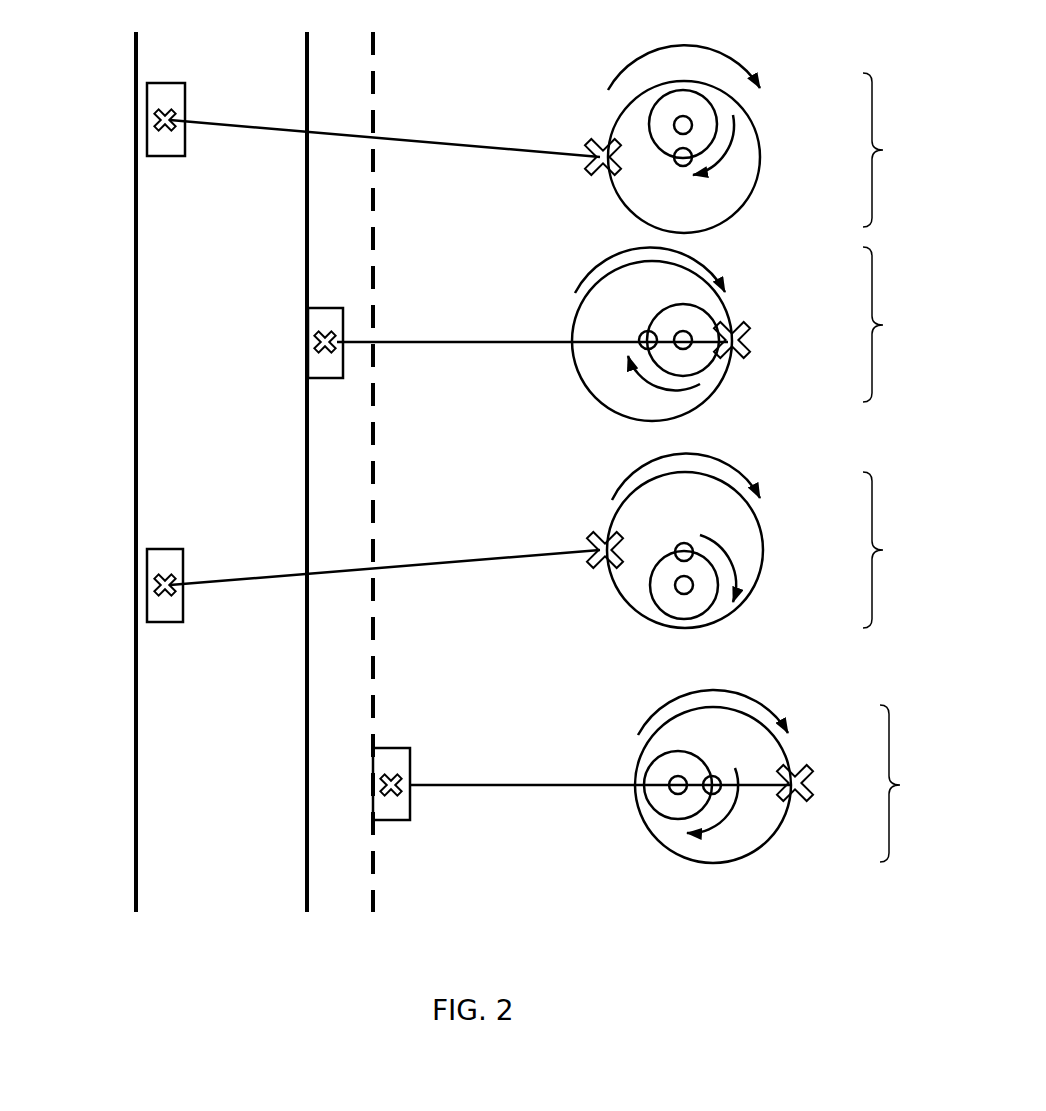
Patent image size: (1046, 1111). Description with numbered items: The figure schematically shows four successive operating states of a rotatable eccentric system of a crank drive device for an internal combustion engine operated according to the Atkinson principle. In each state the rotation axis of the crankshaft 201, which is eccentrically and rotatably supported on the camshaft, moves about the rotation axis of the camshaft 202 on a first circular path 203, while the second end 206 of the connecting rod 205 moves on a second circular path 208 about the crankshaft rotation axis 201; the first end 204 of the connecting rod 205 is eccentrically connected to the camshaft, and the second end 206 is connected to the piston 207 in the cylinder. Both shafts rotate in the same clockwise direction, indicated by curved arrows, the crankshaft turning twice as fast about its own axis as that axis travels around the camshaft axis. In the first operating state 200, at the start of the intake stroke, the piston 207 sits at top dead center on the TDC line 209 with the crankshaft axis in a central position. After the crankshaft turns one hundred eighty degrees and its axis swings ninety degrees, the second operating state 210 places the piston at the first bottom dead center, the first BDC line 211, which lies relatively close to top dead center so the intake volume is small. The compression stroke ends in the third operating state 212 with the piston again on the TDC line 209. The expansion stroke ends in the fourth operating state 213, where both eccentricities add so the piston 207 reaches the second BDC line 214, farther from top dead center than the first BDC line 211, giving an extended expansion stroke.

The first operating state 200 is at (902, 150).
The rotation axis of the crankshaft 201 is at (682, 166).
The rotation axis of the camshaft 202 is at (674, 124).
The first circular path 203 is at (718, 104).
The first end of the connecting rod 204 is at (590, 168).
The connecting rod 205 is at (487, 142).
The second end of the connecting rod 206 is at (178, 128).
The piston 207 is at (165, 83).
The second circular path 208 is at (765, 168).
The TDC line 209 is at (136, 58).
The second operating state 210 is at (903, 324).
The first BDC line 211 is at (307, 50).
The third operating state 212 is at (903, 550).
The fourth operating state 213 is at (919, 783).
The second BDC line 214 is at (373, 40).